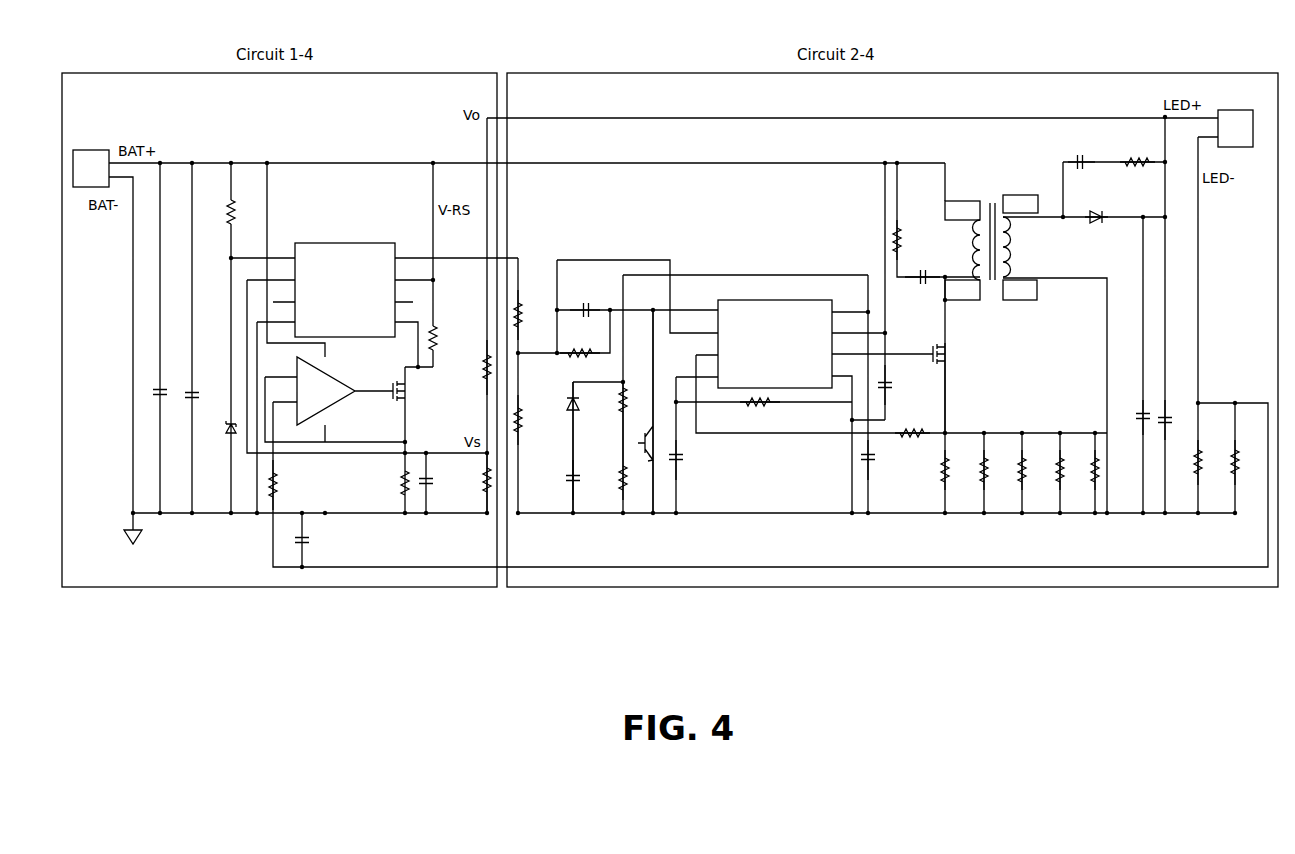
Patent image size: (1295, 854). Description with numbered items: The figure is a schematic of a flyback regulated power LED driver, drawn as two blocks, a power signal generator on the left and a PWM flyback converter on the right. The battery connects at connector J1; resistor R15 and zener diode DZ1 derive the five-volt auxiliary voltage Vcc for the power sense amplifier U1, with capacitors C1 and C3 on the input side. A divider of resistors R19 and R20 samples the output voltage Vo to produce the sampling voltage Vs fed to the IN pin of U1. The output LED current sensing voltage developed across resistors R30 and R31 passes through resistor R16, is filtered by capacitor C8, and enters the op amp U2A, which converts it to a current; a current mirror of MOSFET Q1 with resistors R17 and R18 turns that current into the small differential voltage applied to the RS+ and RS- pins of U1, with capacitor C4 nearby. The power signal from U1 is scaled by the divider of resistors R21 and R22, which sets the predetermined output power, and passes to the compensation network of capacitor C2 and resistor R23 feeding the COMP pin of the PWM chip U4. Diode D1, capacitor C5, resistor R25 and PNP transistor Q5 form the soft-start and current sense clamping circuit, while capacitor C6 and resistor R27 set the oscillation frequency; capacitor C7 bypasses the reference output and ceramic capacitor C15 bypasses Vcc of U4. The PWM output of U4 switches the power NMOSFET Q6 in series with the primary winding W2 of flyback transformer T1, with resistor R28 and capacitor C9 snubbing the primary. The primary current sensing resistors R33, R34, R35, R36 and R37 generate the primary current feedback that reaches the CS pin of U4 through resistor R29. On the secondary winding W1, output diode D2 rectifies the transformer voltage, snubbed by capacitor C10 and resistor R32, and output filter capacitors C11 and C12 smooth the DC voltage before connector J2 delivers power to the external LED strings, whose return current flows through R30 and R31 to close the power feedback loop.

The connector J1 is at (91, 160).
The capacitor C1 is at (169, 338).
The capacitor C3 is at (201, 338).
The resistor R15 is at (245, 210).
The zener diode DZ1 is at (217, 385).
The power sense amplifier U1 is at (344, 281).
The op amp U2A is at (345, 392).
The MOSFET Q1 is at (412, 410).
The resistor R17 is at (448, 344).
The resistor R19 is at (471, 367).
The resistor R20 is at (472, 483).
The resistor R18 is at (391, 483).
The capacitor C4 is at (435, 483).
The resistor R16 is at (288, 485).
The capacitor C8 is at (312, 540).
The resistor R21 is at (532, 315).
The resistor R22 is at (532, 420).
The capacitor C2 is at (585, 298).
The resistor R23 is at (580, 343).
The diode D1 is at (588, 447).
The capacitor C5 is at (583, 480).
The resistor R25 is at (637, 439).
The PNP small signal transistor Q5 is at (657, 411).
The capacitor C6 is at (685, 460).
The PWM IC chip U4 is at (775, 335).
The resistor R27 is at (760, 412).
The bypass capacitor C7 is at (877, 460).
The ceramic capacitor C15 is at (899, 385).
The resistor R29 is at (912, 424).
The resistor R28 is at (911, 239).
The capacitor C9 is at (922, 266).
The power switching NMOSFET Q6 is at (952, 388).
The flyback power transformer T1 is at (991, 242).
The primary winding W2 is at (964, 250).
The secondary winding W1 is at (1019, 247).
The output diode D2 is at (1096, 204).
The capacitor C10 is at (1083, 153).
The resistor R32 is at (1137, 151).
The connector J2 is at (1235, 120).
The output filter capacitor C11 is at (1131, 415).
The output filter capacitor C12 is at (1175, 415).
The output LED current sensing resistor R30 is at (1212, 453).
The output LED current sensing resistor R31 is at (1249, 453).
The primary inductance current sensing resistor R33 is at (932, 468).
The primary inductance current sensing resistor R34 is at (970, 468).
The primary inductance current sensing resistor R35 is at (1008, 468).
The primary inductance current sensing resistor R36 is at (1046, 468).
The primary inductance current sensing resistor R37 is at (1082, 468).